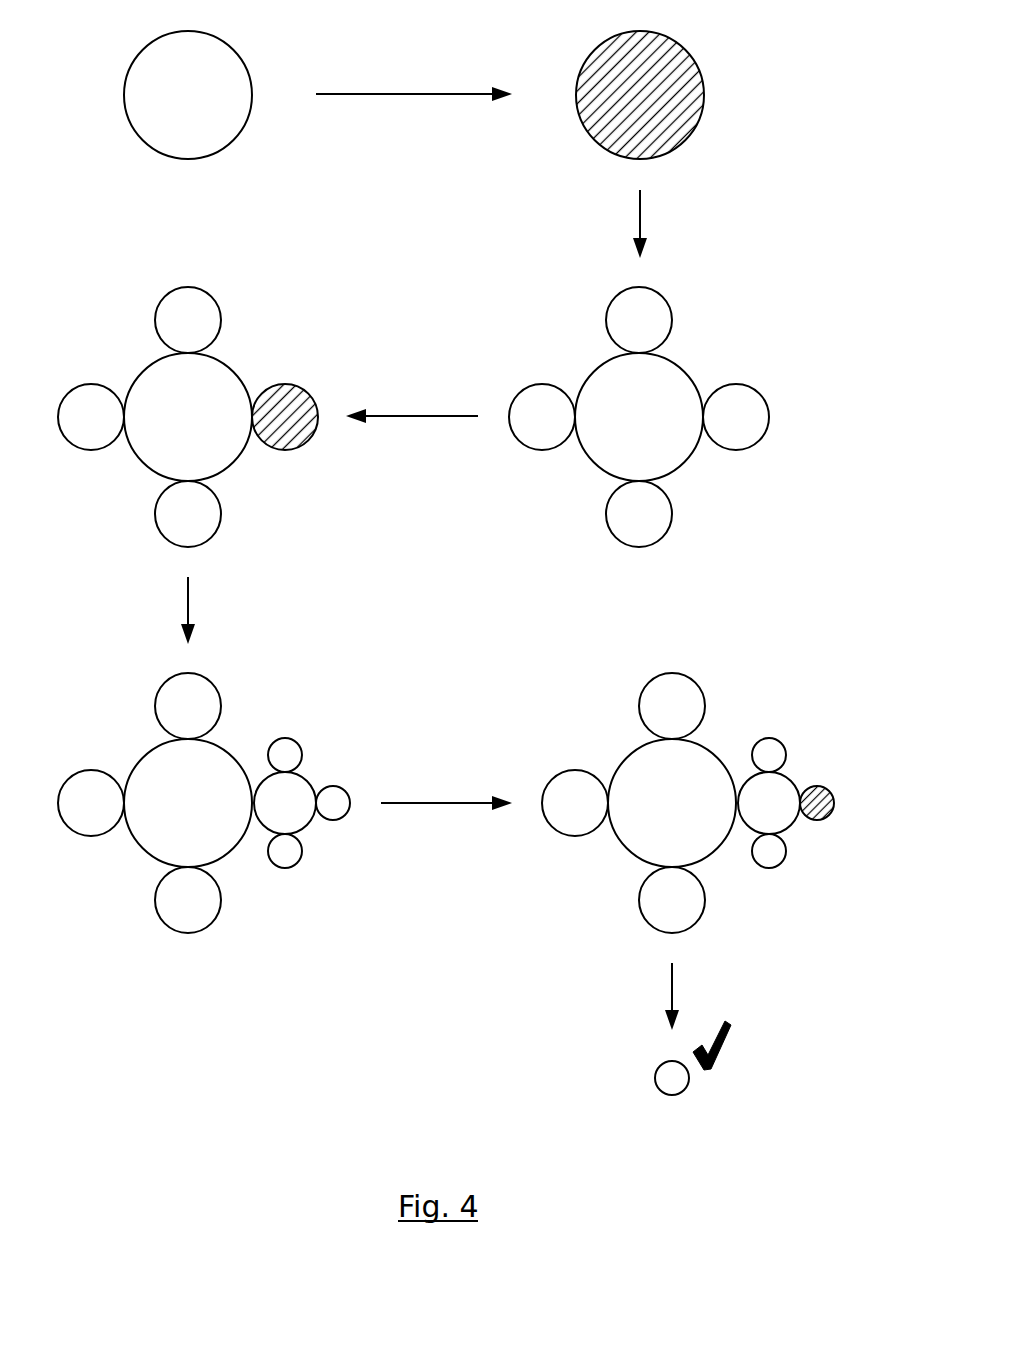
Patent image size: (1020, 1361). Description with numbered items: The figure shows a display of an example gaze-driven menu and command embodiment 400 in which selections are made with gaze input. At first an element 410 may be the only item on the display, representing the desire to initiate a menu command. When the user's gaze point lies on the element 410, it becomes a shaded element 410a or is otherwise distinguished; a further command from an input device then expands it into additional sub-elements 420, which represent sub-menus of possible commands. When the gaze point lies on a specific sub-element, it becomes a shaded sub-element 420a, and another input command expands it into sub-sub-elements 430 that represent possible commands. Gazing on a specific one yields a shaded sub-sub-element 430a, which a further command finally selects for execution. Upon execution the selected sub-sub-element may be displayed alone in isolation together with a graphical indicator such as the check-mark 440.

The display of the menu and command embodiment 400 is at (306, 1062).
The element 410 is at (133, 128).
The shaded element 410a is at (588, 131).
The sub-elements 420 is at (609, 538).
The shaded sub-element 420a is at (299, 448).
The sub-sub-elements 430 is at (303, 872).
The shaded sub-sub-element 430a is at (817, 820).
The check-mark 440 is at (723, 1044).